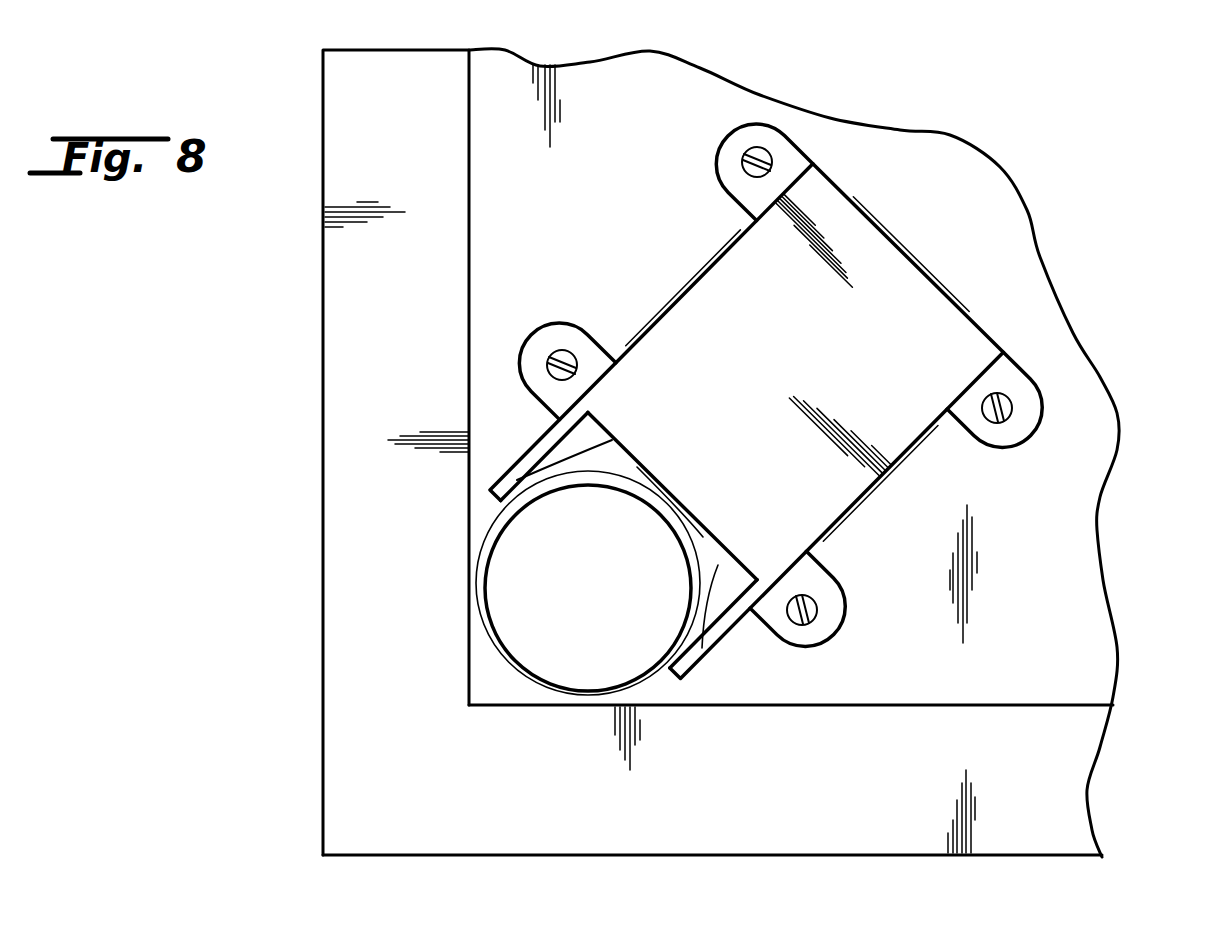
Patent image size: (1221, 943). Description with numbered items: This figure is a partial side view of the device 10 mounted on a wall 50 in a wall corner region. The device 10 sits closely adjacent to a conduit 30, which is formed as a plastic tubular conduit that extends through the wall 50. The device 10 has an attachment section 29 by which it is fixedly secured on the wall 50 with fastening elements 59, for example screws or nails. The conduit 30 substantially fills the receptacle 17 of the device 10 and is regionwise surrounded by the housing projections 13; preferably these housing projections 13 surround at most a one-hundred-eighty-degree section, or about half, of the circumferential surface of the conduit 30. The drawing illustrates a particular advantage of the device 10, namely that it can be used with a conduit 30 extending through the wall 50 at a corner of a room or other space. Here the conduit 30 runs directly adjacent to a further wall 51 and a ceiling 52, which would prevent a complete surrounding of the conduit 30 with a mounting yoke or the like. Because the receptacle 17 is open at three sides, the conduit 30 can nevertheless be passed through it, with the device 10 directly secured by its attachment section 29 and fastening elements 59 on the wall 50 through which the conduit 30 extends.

The device 10 is at (692, 270).
The housing projections 13 is at (520, 468).
The receptacle 17 is at (710, 548).
The attachment section 29 is at (1000, 377).
The conduit 30 is at (483, 577).
The wall 50 is at (1057, 540).
The further wall 51 is at (345, 346).
The ceiling 52 is at (877, 832).
The fastening elements 59 is at (1013, 403).